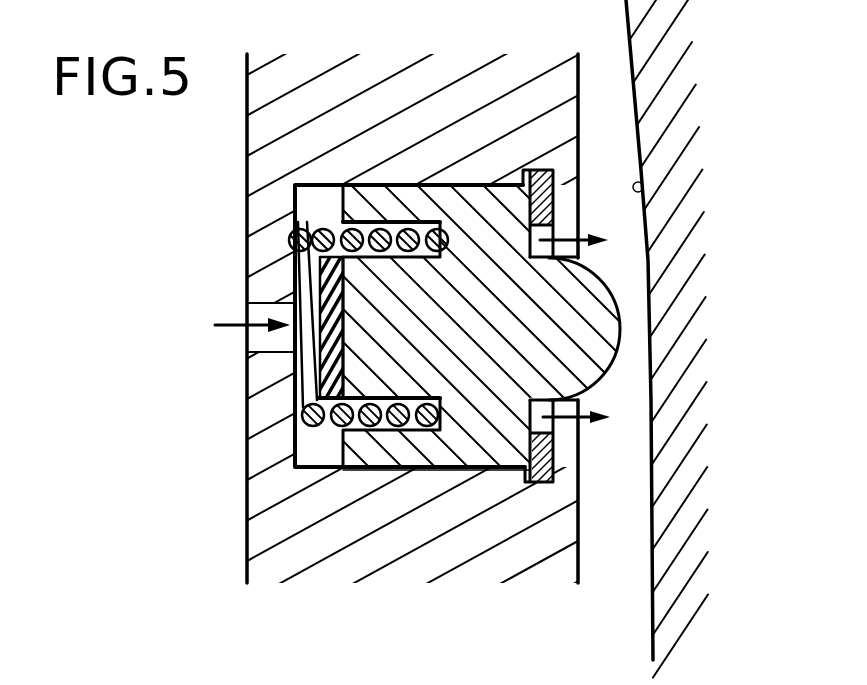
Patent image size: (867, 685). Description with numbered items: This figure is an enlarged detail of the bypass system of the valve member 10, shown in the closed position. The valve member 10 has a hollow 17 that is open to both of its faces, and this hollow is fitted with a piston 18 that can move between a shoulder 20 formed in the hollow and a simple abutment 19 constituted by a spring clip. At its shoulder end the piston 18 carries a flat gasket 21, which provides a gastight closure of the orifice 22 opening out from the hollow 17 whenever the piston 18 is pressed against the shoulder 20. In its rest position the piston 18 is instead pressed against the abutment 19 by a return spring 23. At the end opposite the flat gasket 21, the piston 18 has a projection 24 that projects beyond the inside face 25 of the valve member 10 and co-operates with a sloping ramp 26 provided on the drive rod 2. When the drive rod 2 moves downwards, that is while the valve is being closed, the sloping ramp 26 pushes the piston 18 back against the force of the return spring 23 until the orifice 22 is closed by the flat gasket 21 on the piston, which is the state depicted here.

The drive rod 2 is at (662, 82).
The valve member 10 is at (305, 141).
The hollow 17 is at (318, 447).
The piston 18 is at (477, 428).
The abutment 19 is at (555, 458).
The shoulder 20 is at (296, 438).
The flat gasket 21 is at (323, 277).
The orifice 22 is at (241, 340).
The return spring 23 is at (314, 233).
The projection 24 is at (588, 336).
The inside face 25 is at (558, 153).
The sloping ramp 26 is at (645, 180).